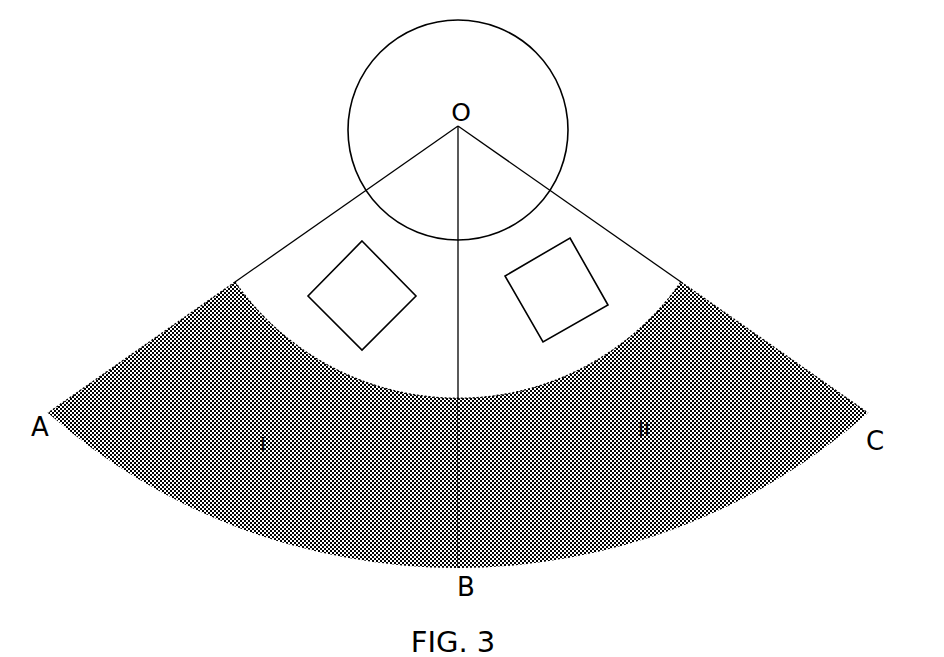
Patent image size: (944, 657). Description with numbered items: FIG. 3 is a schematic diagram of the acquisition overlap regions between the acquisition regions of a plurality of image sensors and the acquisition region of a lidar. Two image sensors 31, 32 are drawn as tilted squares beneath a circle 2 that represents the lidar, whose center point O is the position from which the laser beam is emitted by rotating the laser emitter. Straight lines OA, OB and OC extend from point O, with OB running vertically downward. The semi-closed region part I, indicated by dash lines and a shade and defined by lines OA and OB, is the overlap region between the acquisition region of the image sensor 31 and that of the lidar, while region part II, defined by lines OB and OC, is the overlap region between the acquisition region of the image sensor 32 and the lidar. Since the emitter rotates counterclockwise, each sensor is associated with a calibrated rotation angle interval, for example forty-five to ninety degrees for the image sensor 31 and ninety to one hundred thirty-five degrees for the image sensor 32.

The rotating device / circle 2 is at (518, 37).
The image sensor 31 is at (312, 277).
The image sensor 32 is at (503, 283).